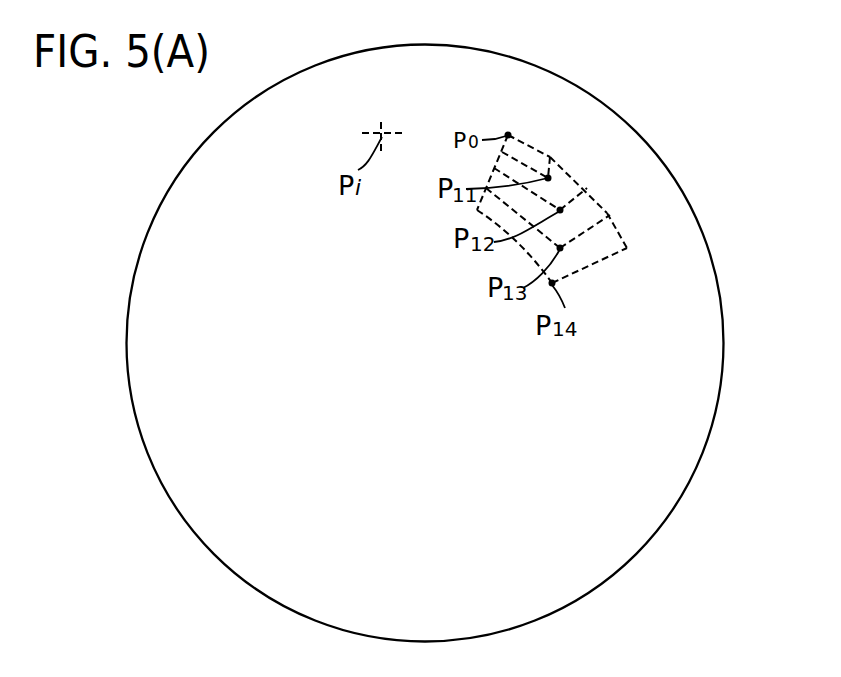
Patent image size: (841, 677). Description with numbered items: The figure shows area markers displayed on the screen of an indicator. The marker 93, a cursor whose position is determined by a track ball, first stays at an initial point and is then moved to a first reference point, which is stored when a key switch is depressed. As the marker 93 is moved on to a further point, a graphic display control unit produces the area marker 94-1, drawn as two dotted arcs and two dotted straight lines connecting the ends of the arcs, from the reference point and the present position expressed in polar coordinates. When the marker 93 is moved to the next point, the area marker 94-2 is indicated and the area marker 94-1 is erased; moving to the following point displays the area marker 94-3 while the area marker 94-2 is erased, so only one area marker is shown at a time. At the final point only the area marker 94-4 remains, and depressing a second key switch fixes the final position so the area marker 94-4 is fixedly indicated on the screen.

The marker 93 is at (377, 113).
The area marker 94-1 is at (547, 157).
The area marker 94-2 is at (562, 190).
The area marker 94-3 is at (587, 215).
The area marker 94-4 is at (602, 246).